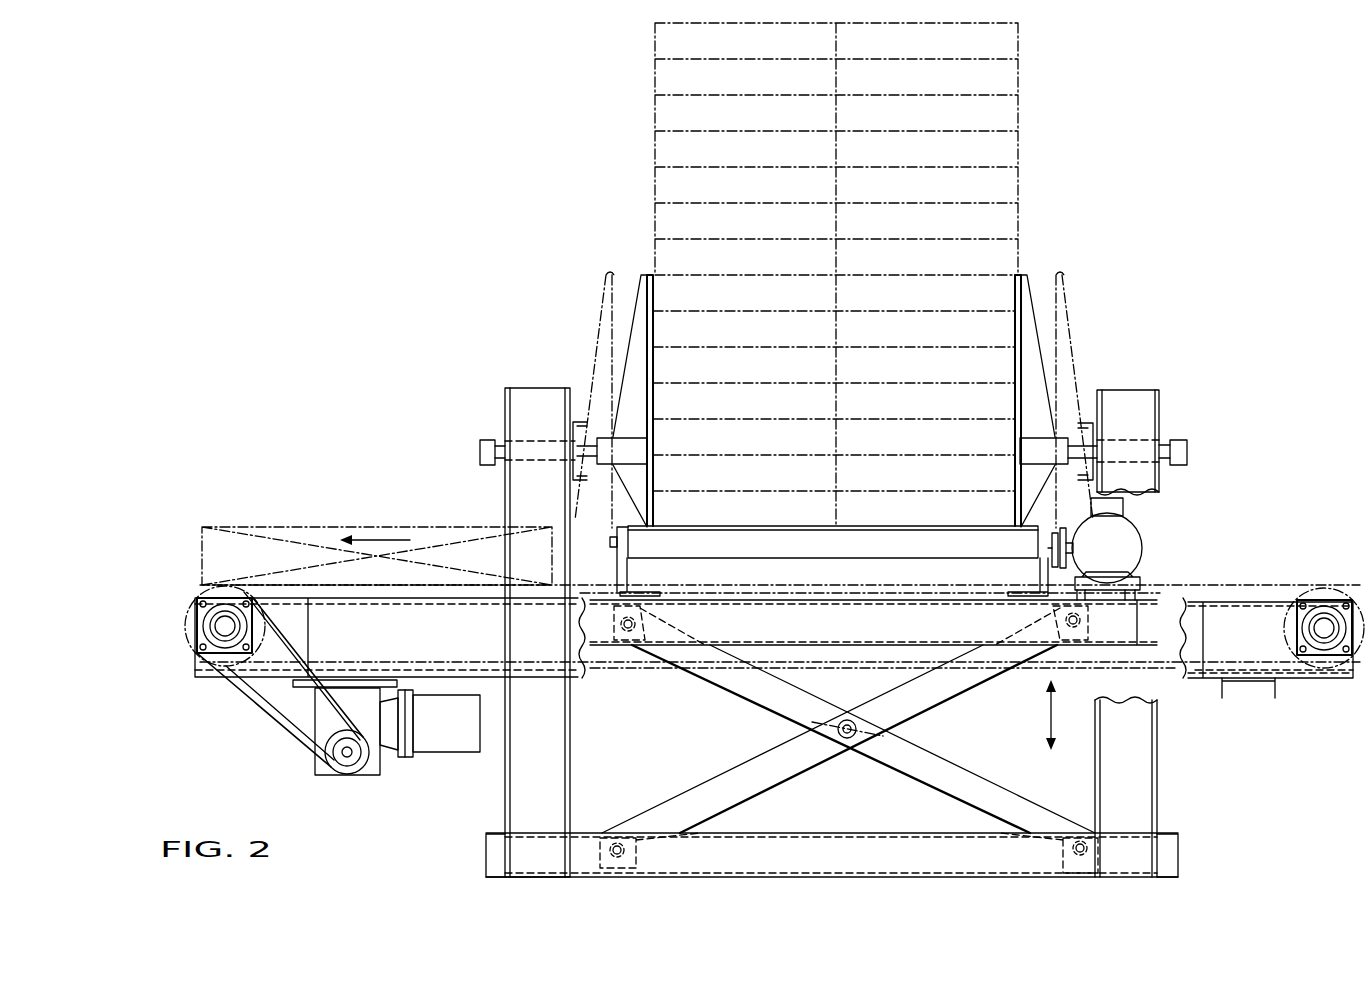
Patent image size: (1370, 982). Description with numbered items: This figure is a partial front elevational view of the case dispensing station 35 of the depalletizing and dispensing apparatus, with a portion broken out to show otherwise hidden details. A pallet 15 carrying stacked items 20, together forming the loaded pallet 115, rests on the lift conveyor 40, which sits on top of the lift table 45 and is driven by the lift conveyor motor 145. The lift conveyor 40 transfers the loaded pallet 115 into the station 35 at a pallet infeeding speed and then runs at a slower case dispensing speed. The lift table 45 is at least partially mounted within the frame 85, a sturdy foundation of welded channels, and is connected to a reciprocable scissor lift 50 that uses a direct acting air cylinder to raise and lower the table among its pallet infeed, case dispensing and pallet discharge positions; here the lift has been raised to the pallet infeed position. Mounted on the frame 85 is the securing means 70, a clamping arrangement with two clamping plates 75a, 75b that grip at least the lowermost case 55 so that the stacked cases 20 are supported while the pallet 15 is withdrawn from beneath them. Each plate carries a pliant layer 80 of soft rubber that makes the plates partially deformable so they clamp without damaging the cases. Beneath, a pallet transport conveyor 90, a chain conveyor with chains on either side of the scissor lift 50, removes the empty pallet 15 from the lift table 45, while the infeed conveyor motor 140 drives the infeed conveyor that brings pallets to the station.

The case dispensing station 35 is at (392, 186).
The stacked items 20 is at (1022, 106).
The loaded pallet 115 is at (630, 245).
The pliant layer 80 is at (1013, 300).
The clamping plate 75a is at (637, 372).
The clamping plate 75b is at (1025, 290).
The securing means 70 is at (1090, 304).
The frame 85 is at (533, 388).
The lowermost case 55 is at (740, 492).
The lift conveyor 40 is at (862, 554).
The lift table 45 is at (920, 600).
The pallet 15 is at (395, 527).
The pallet transport conveyor 90 is at (197, 612).
The infeed conveyor motor 140 is at (455, 748).
The scissor lift 50 is at (925, 712).
The lift conveyor motor 145 is at (1142, 545).